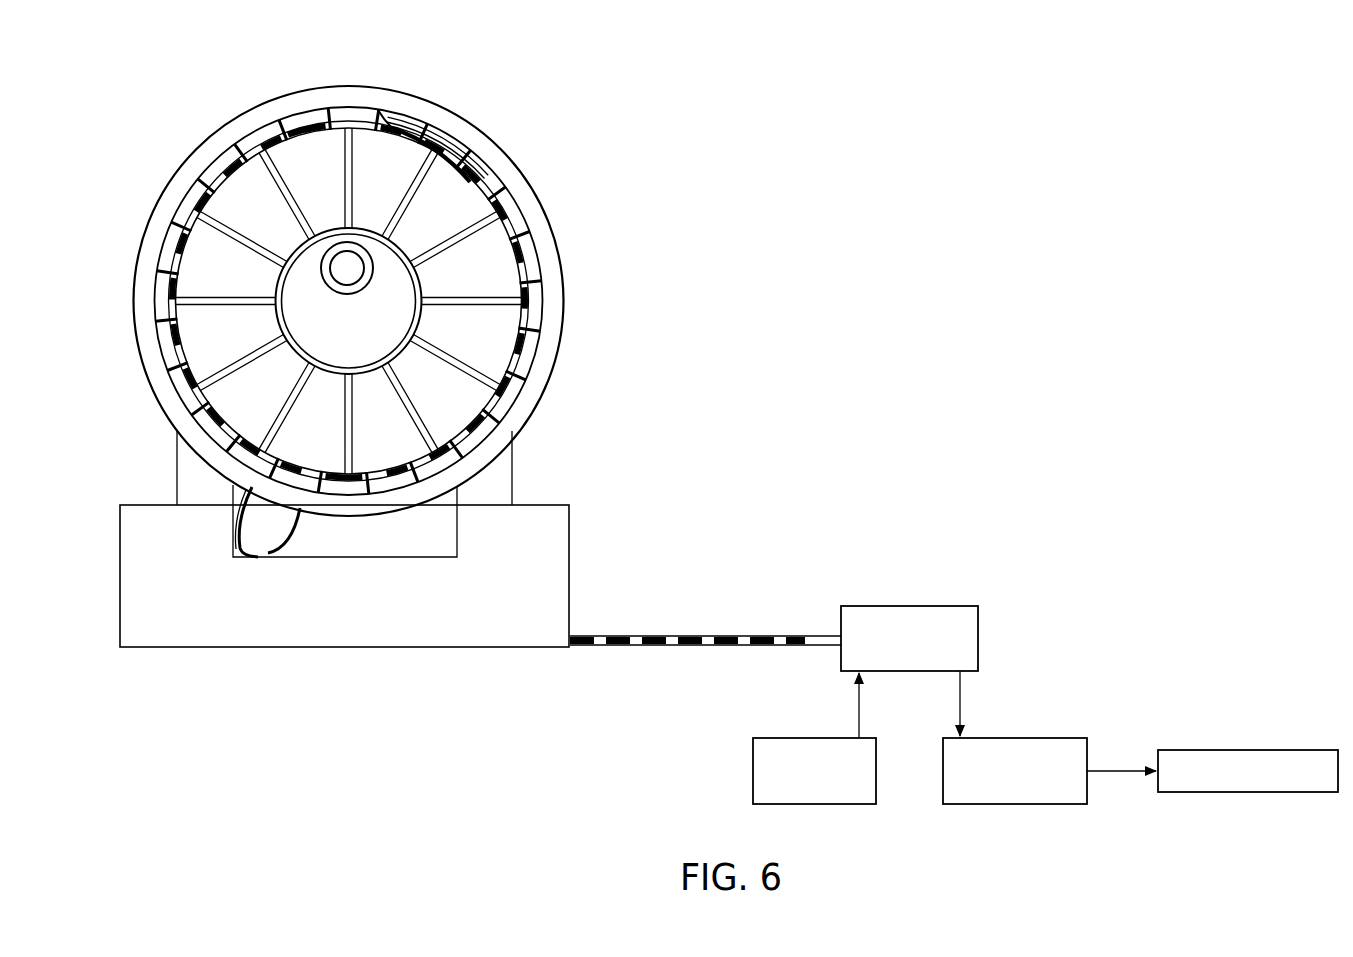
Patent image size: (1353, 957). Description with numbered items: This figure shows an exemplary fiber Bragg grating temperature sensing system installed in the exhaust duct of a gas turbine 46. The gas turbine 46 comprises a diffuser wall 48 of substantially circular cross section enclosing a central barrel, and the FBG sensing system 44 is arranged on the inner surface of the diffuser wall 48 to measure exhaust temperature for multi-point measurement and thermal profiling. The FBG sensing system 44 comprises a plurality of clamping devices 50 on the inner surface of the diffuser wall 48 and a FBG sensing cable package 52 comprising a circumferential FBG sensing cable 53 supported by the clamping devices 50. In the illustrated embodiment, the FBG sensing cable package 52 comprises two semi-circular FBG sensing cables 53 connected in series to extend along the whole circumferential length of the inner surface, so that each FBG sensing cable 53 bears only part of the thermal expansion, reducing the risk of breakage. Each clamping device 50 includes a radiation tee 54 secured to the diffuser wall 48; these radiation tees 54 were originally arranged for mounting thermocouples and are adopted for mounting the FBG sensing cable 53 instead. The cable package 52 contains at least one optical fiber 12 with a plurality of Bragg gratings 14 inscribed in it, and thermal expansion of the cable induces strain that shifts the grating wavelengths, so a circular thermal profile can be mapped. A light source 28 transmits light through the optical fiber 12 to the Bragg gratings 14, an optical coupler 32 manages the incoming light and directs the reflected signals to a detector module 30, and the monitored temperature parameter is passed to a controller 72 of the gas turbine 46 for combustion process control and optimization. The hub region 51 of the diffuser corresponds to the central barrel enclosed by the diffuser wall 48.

The optical fiber 12 is at (479, 161).
The Bragg gratings 14 is at (366, 120).
The light source 28 is at (778, 738).
The detector module 30 is at (1056, 738).
The optical coupler 32 is at (968, 606).
The FBG sensing system 44 is at (502, 193).
The gas turbine 46 is at (1204, 186).
The diffuser wall 48 is at (197, 144).
The clamping devices 50 is at (288, 120).
The hub 51 is at (478, 282).
The FBG sensing cable package 52 is at (528, 257).
The FBG sensing cable 53 is at (172, 345).
The radiation tee 54 is at (536, 363).
The controller 72 is at (1250, 750).